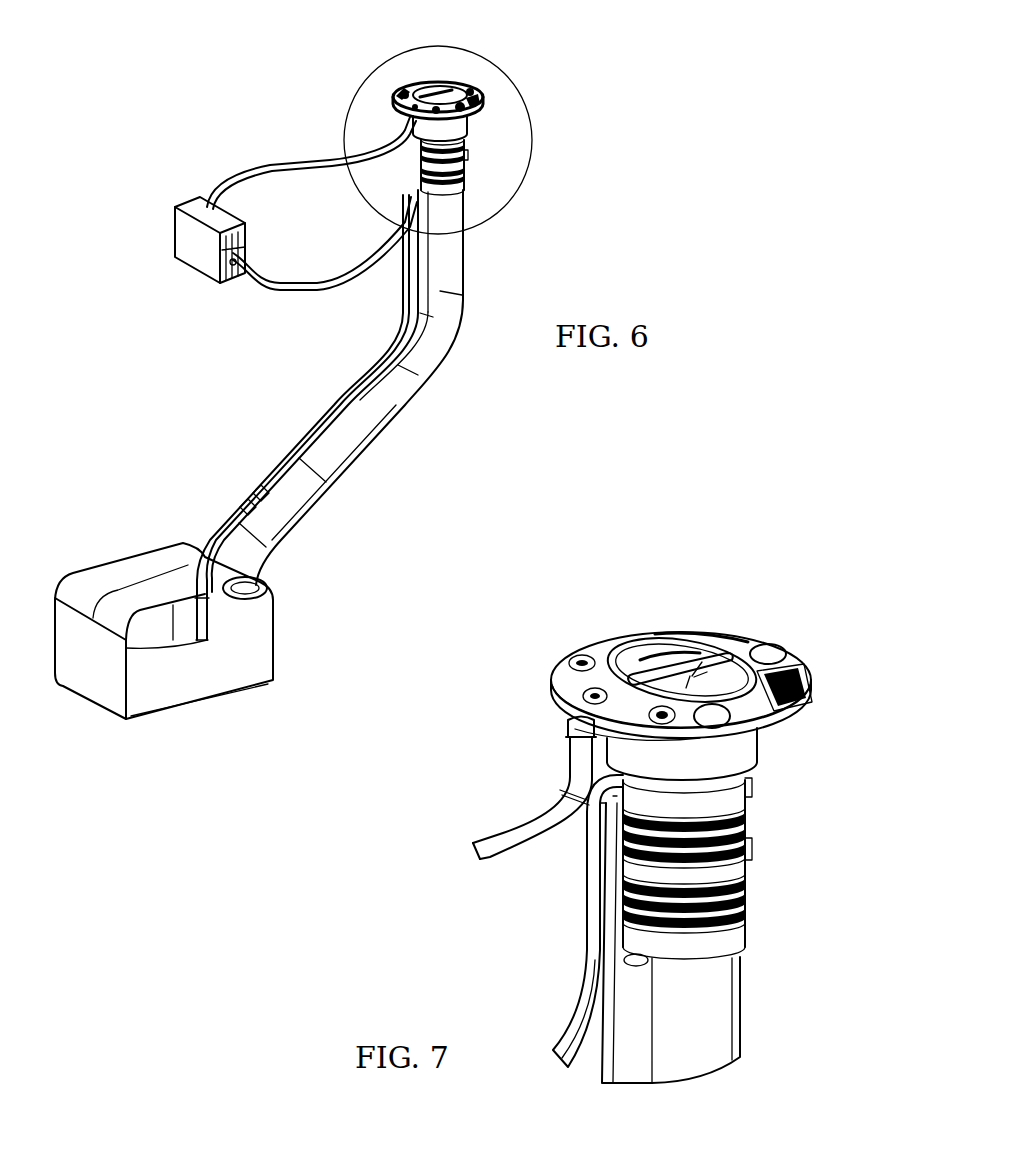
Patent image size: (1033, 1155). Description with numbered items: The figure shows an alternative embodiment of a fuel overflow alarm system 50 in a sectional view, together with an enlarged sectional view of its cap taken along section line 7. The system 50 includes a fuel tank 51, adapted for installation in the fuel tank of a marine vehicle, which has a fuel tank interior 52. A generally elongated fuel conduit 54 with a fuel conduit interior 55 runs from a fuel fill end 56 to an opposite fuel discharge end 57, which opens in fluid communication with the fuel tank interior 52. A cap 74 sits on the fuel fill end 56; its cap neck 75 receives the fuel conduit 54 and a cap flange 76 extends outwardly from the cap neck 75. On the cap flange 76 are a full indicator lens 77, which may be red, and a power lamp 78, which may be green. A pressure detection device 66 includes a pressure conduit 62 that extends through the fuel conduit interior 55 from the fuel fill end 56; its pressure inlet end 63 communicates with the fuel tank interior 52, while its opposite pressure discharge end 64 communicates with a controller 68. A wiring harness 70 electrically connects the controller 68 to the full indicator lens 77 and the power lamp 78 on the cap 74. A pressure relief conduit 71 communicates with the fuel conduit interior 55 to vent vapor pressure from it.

In FIG. 6, the fuel overflow alarm system 50 is at (316, 45).
In FIG. 7, the fuel overflow alarm system 50 is at (733, 557).
In FIG. 6, the fuel tank 51 is at (275, 628).
In FIG. 6, the fuel tank interior 52 is at (232, 693).
In FIG. 6, the fuel conduit 54 is at (443, 371).
In FIG. 6, the fuel conduit interior 55 is at (466, 270).
In FIG. 6, the fuel fill end 56 is at (468, 140).
In FIG. 7, the fuel fill end 56 is at (722, 793).
In FIG. 6, the fuel discharge end 57 is at (268, 594).
In FIG. 6, the pressure conduit 62 is at (393, 357).
In FIG. 7, the pressure conduit 62 is at (587, 913).
In FIG. 6, the pressure inlet end 63 is at (206, 645).
In FIG. 6, the pressure discharge end 64 is at (227, 275).
In FIG. 6, the pressure detection device 66 is at (158, 165).
In FIG. 6, the controller 68 is at (185, 243).
In FIG. 6, the wiring harness 70 is at (292, 163).
In FIG. 7, the wiring harness 70 is at (507, 833).
In FIG. 7, the pressure relief conduit 71 is at (570, 787).
In FIG. 6, the section line 7 is at (532, 168).
In FIG. 6, the cap 74 is at (483, 78).
In FIG. 7, the cap 74 is at (815, 659).
In FIG. 6, the cap neck 75 is at (456, 126).
In FIG. 7, the cap neck 75 is at (737, 753).
In FIG. 6, the cap flange 76 is at (447, 88).
In FIG. 7, the cap flange 76 is at (760, 712).
In FIG. 7, the full indicator lens 77 is at (577, 680).
In FIG. 7, the power lamp 78 is at (557, 710).